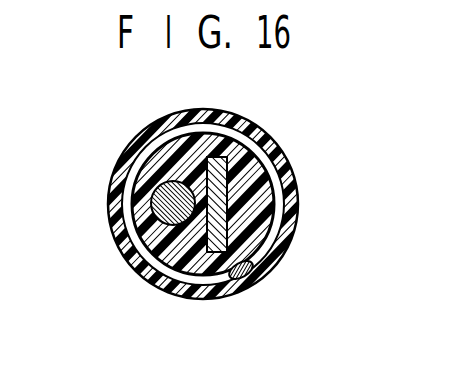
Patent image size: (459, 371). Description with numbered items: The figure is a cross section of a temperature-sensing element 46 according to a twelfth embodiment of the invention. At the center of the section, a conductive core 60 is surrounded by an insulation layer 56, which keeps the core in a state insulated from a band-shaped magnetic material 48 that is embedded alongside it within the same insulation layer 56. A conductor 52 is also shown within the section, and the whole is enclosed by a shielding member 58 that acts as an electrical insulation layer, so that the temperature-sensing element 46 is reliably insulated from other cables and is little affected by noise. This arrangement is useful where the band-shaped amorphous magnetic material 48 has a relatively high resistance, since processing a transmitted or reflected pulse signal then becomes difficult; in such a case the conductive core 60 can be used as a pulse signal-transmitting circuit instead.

The temperature-sensing element 46 is at (316, 184).
The band-shaped magnetic material 48 is at (204, 243).
The conductor 52 is at (248, 272).
The insulation layer 56 is at (145, 168).
The shielding member 58 is at (110, 220).
The conductive core 60 is at (177, 182).